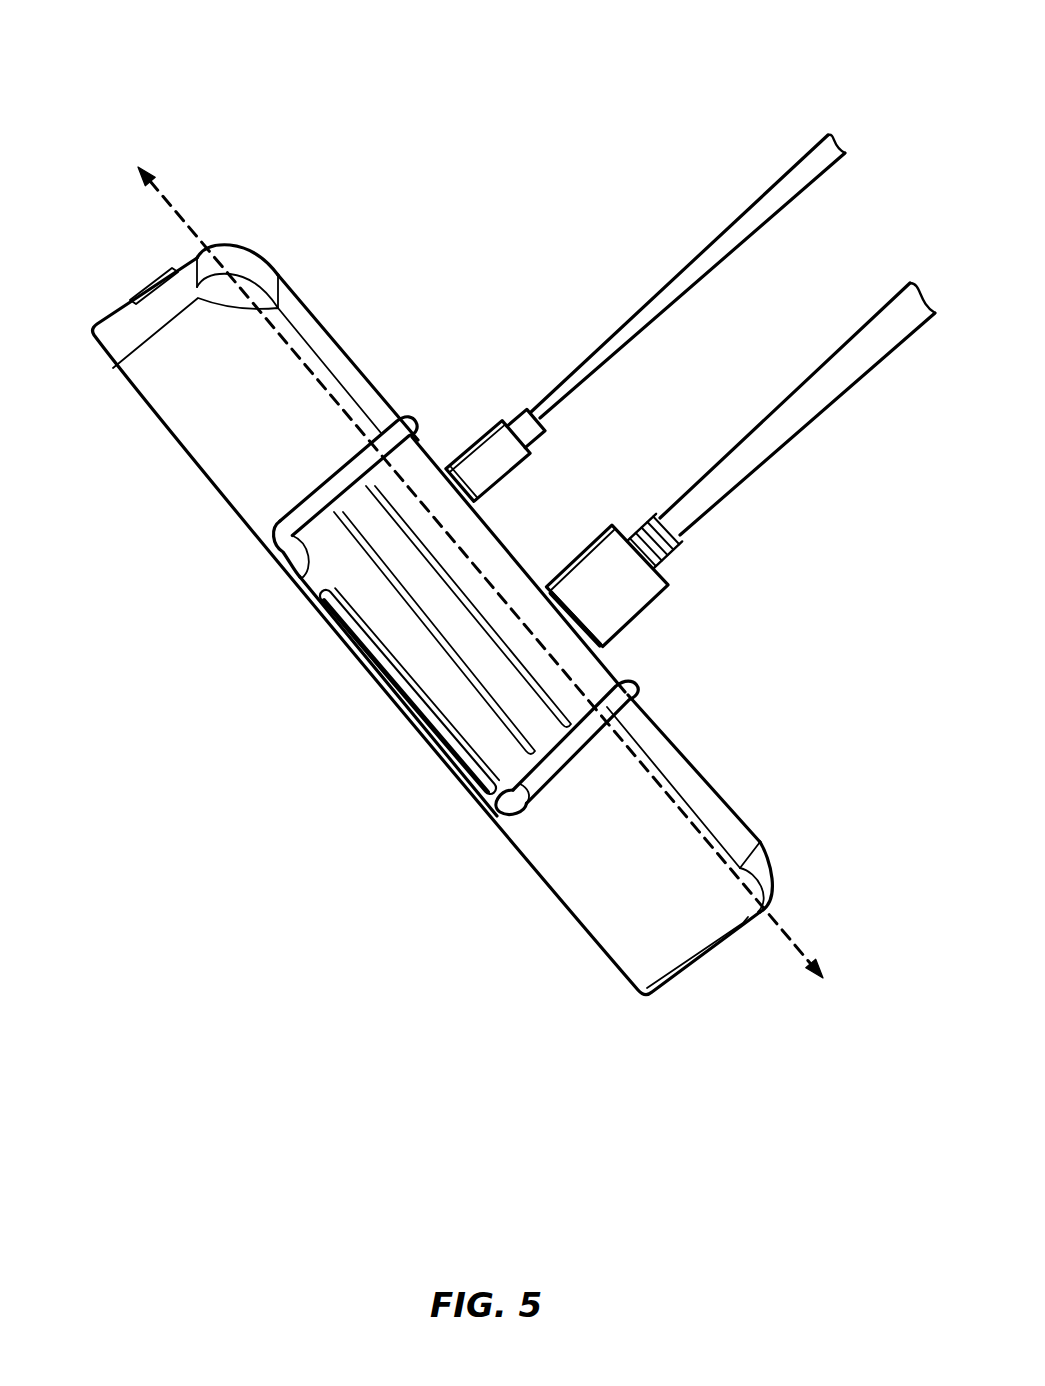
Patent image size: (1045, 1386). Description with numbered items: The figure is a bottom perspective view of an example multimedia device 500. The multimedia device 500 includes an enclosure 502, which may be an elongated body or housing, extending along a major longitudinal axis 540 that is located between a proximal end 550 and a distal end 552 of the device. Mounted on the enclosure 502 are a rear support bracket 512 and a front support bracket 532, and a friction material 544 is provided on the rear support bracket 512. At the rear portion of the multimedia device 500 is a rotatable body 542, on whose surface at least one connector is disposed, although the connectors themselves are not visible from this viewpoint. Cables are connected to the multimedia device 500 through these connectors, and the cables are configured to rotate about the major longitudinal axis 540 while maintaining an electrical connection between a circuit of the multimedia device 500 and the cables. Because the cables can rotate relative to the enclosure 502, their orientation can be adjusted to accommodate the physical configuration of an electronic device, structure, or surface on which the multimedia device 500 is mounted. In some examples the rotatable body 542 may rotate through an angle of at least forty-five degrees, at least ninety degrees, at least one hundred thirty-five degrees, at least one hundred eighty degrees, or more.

The multimedia device 500 is at (210, 82).
The enclosure 502 is at (127, 303).
The rear support bracket 512 is at (290, 572).
The front support bracket 532 is at (470, 733).
The major longitudinal axis 540 is at (165, 189).
The rotatable body 542 is at (482, 550).
The friction material 544 is at (385, 667).
The proximal end 550 is at (250, 243).
The distal end 552 is at (779, 884).